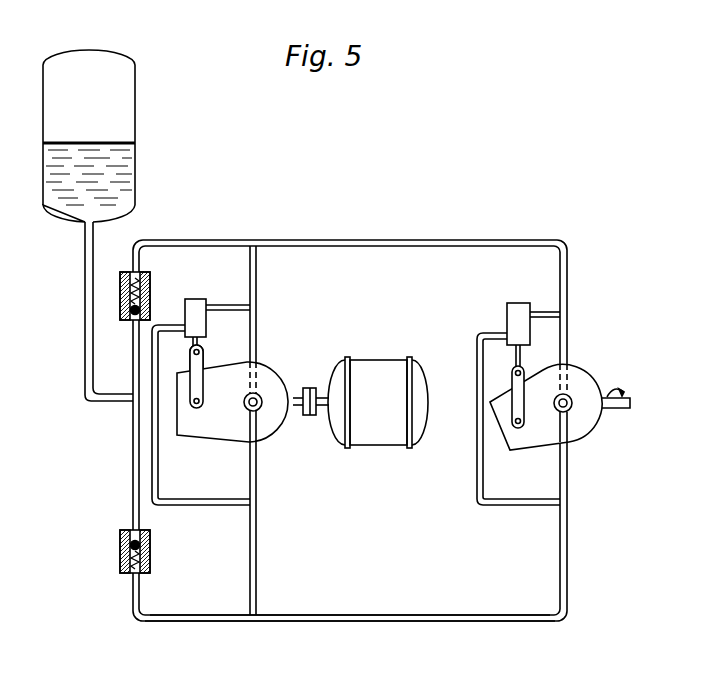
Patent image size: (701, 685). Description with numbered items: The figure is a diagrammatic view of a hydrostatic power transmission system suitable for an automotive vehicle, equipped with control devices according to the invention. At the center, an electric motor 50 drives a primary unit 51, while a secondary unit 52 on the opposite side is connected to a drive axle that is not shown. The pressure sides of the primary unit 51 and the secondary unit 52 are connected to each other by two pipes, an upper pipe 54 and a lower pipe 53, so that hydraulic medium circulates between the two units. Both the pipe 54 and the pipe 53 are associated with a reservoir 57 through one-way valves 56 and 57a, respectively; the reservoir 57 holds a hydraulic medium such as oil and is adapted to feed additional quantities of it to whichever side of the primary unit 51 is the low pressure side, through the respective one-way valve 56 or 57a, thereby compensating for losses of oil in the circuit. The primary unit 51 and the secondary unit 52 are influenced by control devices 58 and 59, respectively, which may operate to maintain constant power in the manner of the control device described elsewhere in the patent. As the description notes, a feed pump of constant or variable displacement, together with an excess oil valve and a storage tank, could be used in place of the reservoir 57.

The electric motor 50 is at (383, 438).
The primary unit 51 is at (209, 441).
The secondary unit 52 is at (528, 448).
The pipe 53 is at (375, 614).
The pipe 54 is at (449, 240).
The one-way valve 56 is at (150, 292).
The reservoir 57 is at (136, 146).
The one-way valve 57a is at (150, 553).
The control device 58 is at (206, 327).
The control device 59 is at (512, 310).